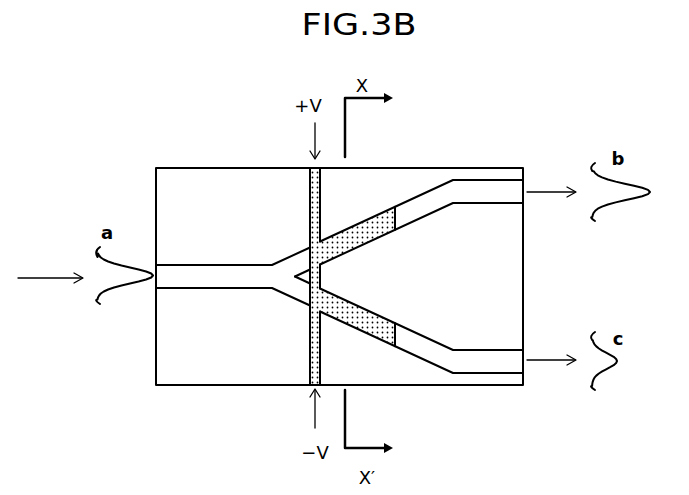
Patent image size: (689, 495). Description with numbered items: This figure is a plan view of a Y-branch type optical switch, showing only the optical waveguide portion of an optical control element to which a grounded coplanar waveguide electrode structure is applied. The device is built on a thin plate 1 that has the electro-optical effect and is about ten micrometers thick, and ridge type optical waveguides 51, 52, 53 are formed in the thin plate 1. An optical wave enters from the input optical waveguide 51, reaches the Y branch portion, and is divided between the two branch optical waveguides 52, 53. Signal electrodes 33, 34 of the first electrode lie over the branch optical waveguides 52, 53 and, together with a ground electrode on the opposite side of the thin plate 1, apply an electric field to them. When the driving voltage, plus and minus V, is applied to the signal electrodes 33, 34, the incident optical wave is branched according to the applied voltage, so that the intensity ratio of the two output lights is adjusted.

The thin plate 1 is at (205, 198).
The signal electrode 33 is at (358, 238).
The signal electrode 34 is at (360, 316).
The optical waveguide 51 is at (198, 278).
The optical waveguide 52 is at (486, 192).
The optical waveguide 53 is at (487, 360).